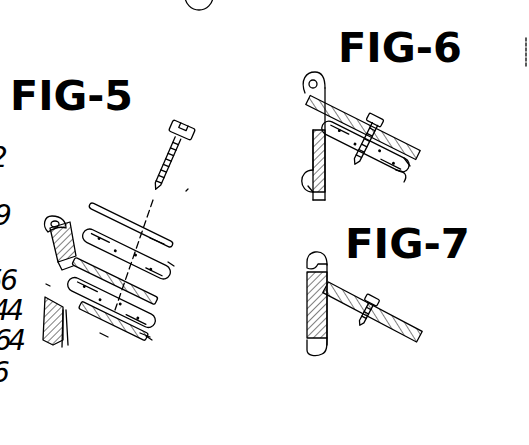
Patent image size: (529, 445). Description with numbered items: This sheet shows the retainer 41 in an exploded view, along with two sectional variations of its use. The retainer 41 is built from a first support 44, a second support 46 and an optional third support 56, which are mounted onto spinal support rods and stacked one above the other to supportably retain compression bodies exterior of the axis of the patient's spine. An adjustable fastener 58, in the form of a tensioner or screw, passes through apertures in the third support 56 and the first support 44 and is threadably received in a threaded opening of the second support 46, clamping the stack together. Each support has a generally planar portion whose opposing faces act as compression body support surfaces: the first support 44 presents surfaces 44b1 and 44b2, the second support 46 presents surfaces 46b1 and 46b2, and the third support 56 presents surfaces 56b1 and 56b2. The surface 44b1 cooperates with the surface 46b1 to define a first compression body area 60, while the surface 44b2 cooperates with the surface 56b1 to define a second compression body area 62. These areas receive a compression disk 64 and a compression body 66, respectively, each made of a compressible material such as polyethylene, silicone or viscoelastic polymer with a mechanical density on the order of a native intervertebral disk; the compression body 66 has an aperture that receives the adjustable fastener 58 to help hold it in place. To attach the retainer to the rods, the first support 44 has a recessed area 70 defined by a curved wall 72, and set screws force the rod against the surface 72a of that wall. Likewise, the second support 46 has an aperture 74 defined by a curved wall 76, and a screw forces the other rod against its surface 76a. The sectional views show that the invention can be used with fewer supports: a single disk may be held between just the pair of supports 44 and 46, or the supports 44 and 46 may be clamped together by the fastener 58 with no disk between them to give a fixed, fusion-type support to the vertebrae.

In FIG. 5, the retainer 41 is at (190, 187).
In FIG. 6, the first support 44 is at (407, 143).
In FIG. 7, the first support 44 is at (410, 315).
In FIG. 5, the surface 44b1 is at (148, 338).
In FIG. 5, the surface 44b2 is at (160, 296).
In FIG. 5, the second support 46 is at (148, 338).
In FIG. 6, the second support 46 is at (395, 175).
In FIG. 7, the second support 46 is at (400, 340).
In FIG. 5, the surface 46b1 is at (126, 334).
In FIG. 5, the surface 46b2 is at (107, 337).
In FIG. 5, the third support 56 is at (183, 248).
In FIG. 5, the surface 56b1 is at (163, 230).
In FIG. 5, the surface 56b2 is at (173, 258).
In FIG. 5, the adjustable fastener 58 is at (172, 138).
In FIG. 6, the adjustable fastener 58 is at (383, 127).
In FIG. 7, the adjustable fastener 58 is at (390, 300).
In FIG. 5, the first compression body area 60 is at (46, 282).
In FIG. 5, the second compression body area 62 is at (84, 213).
In FIG. 5, the compression disk 64 is at (87, 298).
In FIG. 6, the compression disk 64 is at (407, 163).
In FIG. 5, the compression body 66 is at (187, 280).
In FIG. 5, the recessed area 70 is at (52, 190).
In FIG. 6, the recessed area 70 is at (302, 85).
In FIG. 6, the curved wall 72 is at (325, 70).
In FIG. 5, the surface 72a is at (52, 218).
In FIG. 6, the surface 72a is at (310, 72).
In FIG. 6, the aperture 74 is at (302, 177).
In FIG. 6, the curved wall 76 is at (318, 193).
In FIG. 6, the surface 76a is at (310, 188).